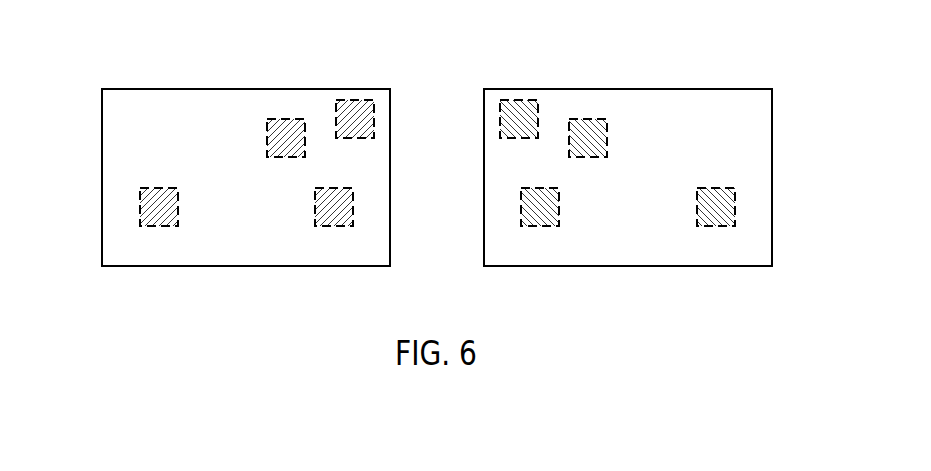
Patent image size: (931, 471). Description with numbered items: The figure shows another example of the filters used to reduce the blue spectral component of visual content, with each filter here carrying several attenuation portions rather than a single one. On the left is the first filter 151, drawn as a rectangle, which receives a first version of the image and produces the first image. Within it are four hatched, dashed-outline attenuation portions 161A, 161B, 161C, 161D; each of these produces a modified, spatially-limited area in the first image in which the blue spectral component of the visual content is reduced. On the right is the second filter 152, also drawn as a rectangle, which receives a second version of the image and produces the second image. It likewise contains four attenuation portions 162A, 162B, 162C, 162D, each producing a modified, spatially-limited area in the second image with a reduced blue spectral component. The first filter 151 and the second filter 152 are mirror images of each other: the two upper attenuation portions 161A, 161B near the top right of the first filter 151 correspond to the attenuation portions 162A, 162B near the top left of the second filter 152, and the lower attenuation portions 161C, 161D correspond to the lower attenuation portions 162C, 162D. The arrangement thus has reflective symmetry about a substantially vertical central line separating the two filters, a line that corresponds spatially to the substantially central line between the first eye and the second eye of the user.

The first filter 151 is at (102, 124).
The second filter 152 is at (772, 124).
The attenuation portion 161A is at (353, 100).
The attenuation portion 161B is at (290, 119).
The attenuation portion 161C is at (330, 226).
The attenuation portion 161D is at (155, 226).
The attenuation portion 162A is at (519, 100).
The attenuation portion 162B is at (585, 119).
The attenuation portion 162C is at (542, 226).
The attenuation portion 162D is at (715, 226).